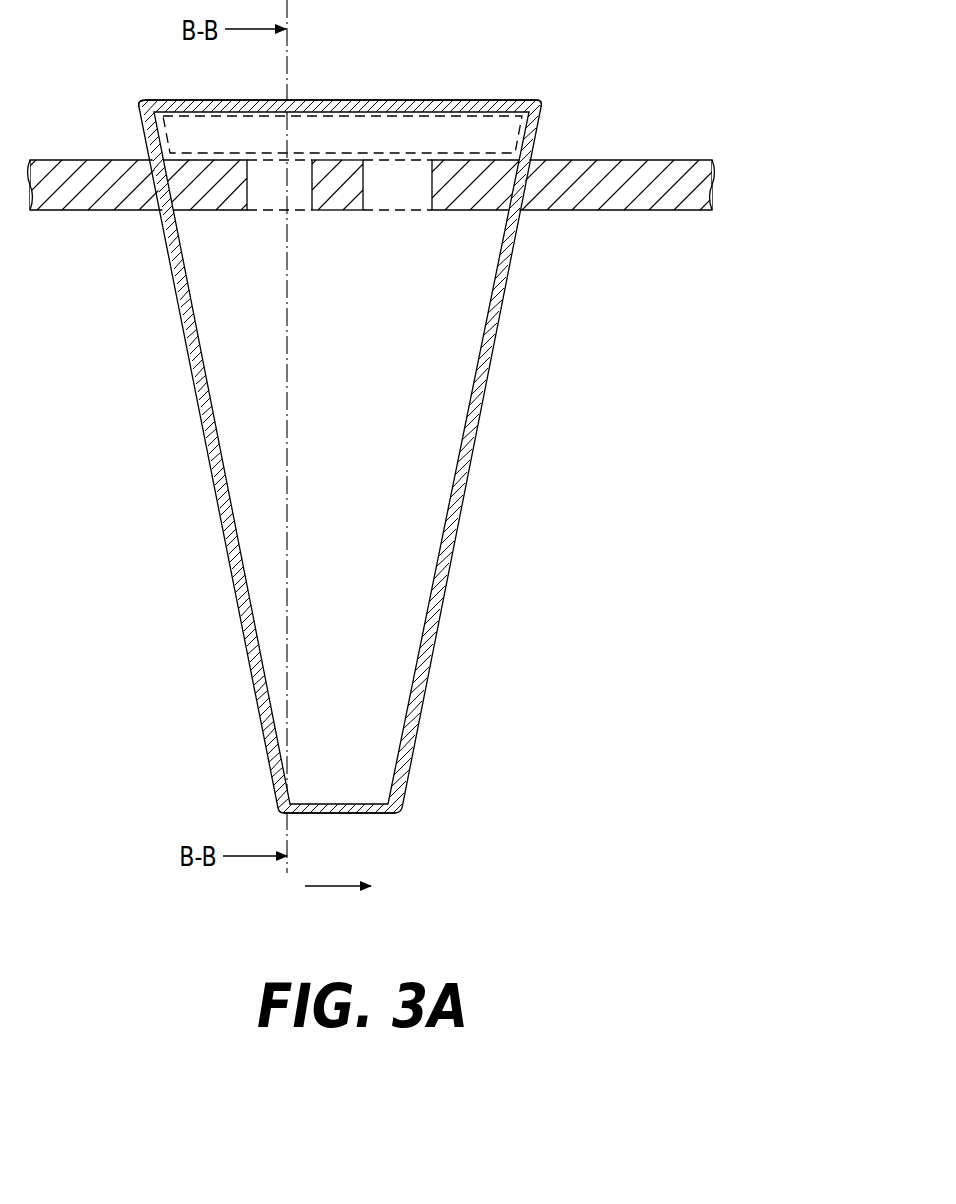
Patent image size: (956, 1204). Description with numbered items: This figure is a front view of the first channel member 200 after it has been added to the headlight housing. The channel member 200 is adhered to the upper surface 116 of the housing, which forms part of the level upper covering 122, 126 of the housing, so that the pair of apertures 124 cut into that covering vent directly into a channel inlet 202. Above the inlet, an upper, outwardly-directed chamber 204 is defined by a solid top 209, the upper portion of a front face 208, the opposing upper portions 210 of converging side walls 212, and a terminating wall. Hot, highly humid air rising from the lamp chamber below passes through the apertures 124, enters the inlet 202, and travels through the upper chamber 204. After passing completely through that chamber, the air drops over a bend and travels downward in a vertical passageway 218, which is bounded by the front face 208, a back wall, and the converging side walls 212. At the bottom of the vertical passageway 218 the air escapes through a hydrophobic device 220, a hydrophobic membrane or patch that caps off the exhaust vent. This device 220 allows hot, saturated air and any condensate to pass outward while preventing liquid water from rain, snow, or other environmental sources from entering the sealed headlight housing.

The first channel member 200 is at (520, 559).
The channel inlet 202 is at (423, 135).
The upper, outwardly-directed chamber 204 is at (458, 127).
The front face 208 is at (336, 405).
The solid top 209 is at (372, 110).
The opposing upper portions of converging side walls 210 is at (147, 124).
The converging side walls 212 is at (235, 528).
The vertical passageway 218 is at (261, 135).
The hydrophobic device 220 is at (373, 819).
The upper surface 116 is at (333, 173).
The level upper covering 122 is at (620, 185).
The pair of apertures 124 is at (387, 215).
The level upper covering 126 is at (570, 173).